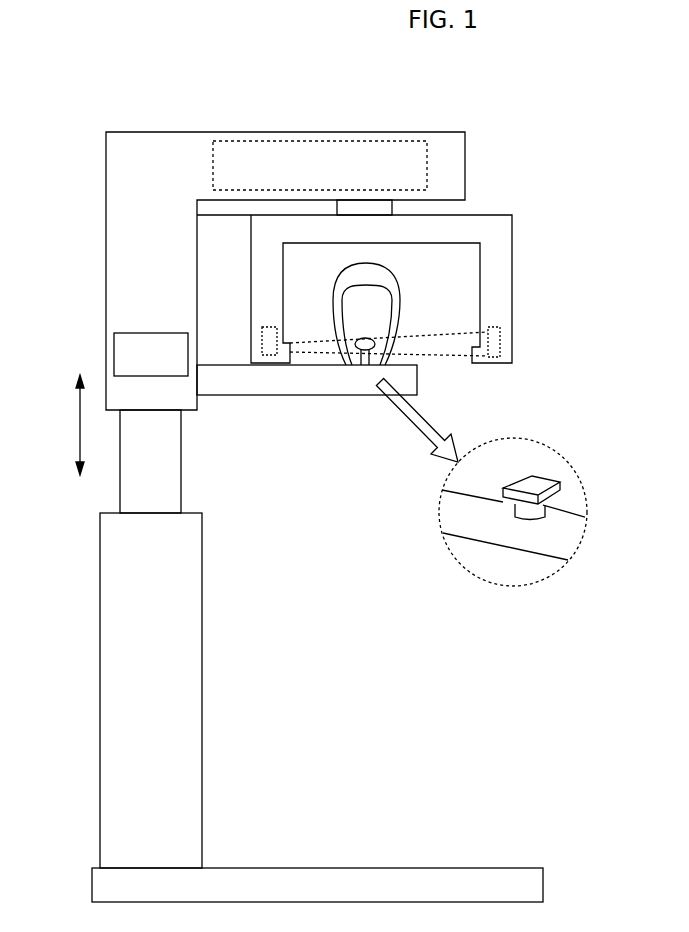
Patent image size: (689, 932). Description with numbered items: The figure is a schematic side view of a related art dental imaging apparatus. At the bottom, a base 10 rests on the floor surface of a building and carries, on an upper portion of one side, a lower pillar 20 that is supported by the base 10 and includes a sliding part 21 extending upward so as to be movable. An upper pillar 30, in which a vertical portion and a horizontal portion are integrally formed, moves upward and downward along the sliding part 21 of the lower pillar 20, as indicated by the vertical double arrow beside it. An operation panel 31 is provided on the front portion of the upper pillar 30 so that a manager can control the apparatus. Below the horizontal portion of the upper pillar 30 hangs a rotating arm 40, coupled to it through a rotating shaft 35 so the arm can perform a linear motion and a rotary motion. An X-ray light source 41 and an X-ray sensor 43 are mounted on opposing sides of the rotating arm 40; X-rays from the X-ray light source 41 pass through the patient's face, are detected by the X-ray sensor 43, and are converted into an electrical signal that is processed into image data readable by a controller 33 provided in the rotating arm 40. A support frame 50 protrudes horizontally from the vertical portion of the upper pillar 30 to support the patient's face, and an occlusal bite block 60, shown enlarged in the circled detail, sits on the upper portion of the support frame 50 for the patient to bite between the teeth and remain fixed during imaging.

The base 10 is at (359, 866).
The lower pillar 20 is at (100, 640).
The sliding part 21 is at (125, 490).
The upper pillar 30 is at (106, 232).
The operation panel 31 is at (110, 348).
The controller 33 is at (245, 140).
The rotating shaft 35 is at (355, 200).
The rotating arm 40 is at (512, 228).
The X-ray light source 41 is at (273, 364).
The X-ray sensor 43 is at (504, 338).
The support frame 50 is at (305, 396).
The occlusal bite block 60 is at (535, 478).